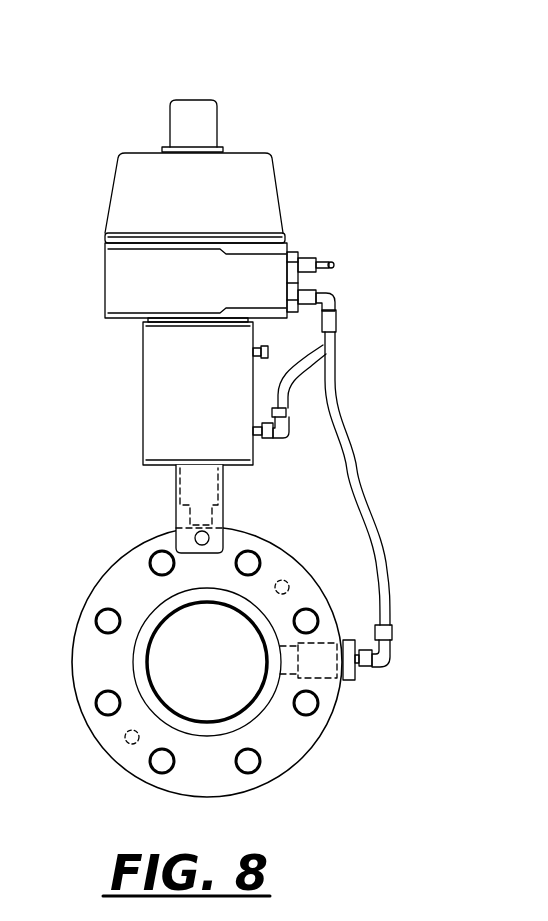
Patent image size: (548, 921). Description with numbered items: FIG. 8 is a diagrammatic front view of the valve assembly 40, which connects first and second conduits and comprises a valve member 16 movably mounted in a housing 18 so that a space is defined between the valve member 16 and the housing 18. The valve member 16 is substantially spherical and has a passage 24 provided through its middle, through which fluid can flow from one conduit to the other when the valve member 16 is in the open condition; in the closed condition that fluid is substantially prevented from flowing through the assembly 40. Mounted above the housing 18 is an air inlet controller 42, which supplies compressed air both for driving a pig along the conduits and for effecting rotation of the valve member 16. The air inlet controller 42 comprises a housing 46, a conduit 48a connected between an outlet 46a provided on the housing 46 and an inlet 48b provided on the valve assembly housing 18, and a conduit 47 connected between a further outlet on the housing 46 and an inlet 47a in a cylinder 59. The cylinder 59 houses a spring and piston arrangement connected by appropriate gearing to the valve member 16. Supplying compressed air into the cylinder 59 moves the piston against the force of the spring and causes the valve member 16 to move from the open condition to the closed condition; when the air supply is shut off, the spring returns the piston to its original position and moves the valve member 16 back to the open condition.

The valve assembly 40 is at (264, 112).
The air inlet controller 42 is at (91, 205).
The housing 46 is at (257, 193).
The outlet 46a is at (332, 302).
The conduit 47 is at (288, 392).
The inlet 47a is at (273, 438).
The conduit 48a is at (353, 460).
The inlet 48b is at (350, 681).
The cylinder 59 is at (168, 397).
The passage 24 is at (182, 635).
The valve member 16 is at (250, 712).
The housing 18 is at (102, 729).